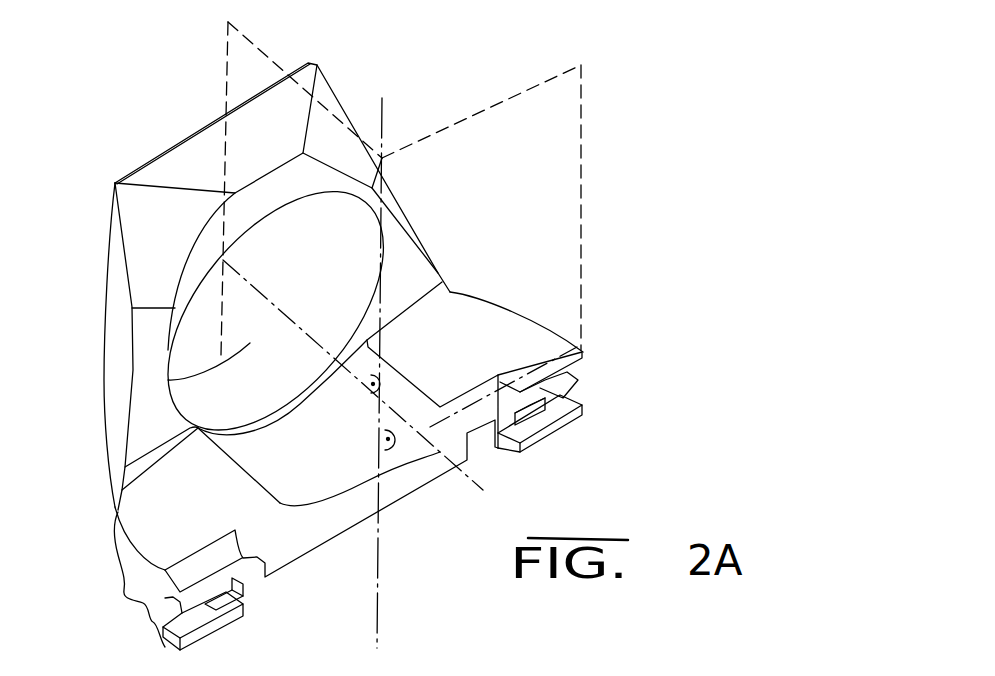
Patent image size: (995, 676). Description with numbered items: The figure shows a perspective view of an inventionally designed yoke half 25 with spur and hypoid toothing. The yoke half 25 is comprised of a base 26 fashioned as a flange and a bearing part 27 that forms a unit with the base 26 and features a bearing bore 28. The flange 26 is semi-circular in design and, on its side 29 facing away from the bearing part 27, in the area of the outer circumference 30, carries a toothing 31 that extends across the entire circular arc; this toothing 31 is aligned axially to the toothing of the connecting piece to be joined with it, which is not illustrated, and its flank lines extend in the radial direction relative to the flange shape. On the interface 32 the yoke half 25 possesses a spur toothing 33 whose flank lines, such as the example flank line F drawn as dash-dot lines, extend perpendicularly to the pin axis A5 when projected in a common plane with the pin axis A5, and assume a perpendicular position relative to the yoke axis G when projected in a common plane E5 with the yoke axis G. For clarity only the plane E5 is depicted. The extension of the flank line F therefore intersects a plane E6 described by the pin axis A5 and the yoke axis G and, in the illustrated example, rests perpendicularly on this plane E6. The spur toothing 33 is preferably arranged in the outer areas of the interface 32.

The yoke half 25 is at (400, 137).
The base 26 is at (152, 518).
The bearing part 27 is at (220, 115).
The bearing bore 28 is at (306, 200).
The side 29 is at (278, 582).
The outer circumference 30 is at (126, 610).
The toothing 31 is at (120, 587).
The interface 32 is at (397, 485).
The spur toothing 33 is at (585, 390).
The pin axis A5 is at (252, 282).
The plane E5 is at (582, 197).
The plane E6 is at (270, 58).
The flank line F is at (587, 343).
The yoke axis G is at (388, 373).